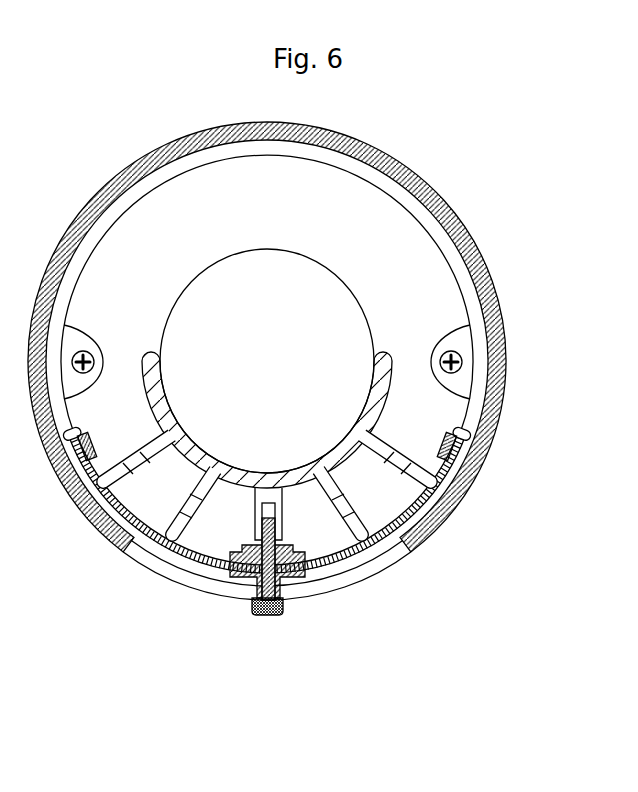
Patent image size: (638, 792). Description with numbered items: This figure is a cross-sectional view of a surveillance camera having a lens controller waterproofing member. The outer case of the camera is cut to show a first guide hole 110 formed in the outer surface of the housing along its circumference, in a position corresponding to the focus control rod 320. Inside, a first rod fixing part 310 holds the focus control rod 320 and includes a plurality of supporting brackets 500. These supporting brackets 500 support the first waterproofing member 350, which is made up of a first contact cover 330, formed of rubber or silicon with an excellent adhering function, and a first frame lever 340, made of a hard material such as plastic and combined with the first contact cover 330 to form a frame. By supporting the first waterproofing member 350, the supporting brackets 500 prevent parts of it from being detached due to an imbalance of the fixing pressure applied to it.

The first guide hole 110 is at (201, 577).
The first rod fixing part 310 is at (387, 382).
The focus control rod 320 is at (270, 617).
The first contact cover 330 is at (305, 557).
The first frame lever 340 is at (282, 588).
The first waterproofing member 350 is at (393, 574).
The supporting brackets 500 is at (330, 552).